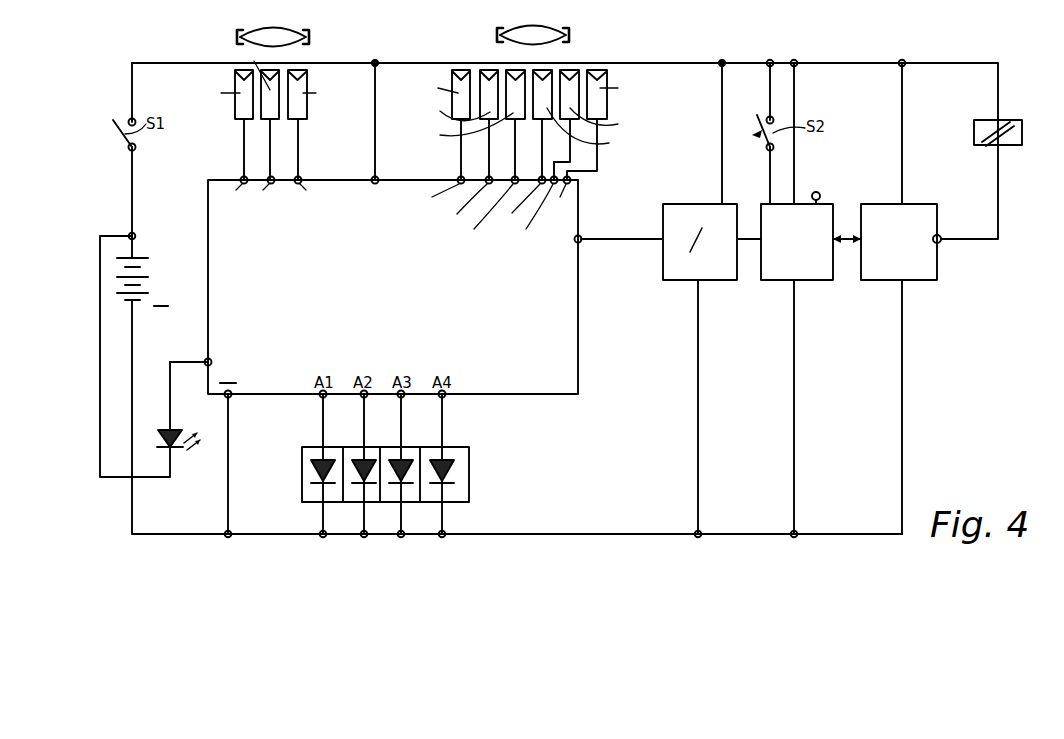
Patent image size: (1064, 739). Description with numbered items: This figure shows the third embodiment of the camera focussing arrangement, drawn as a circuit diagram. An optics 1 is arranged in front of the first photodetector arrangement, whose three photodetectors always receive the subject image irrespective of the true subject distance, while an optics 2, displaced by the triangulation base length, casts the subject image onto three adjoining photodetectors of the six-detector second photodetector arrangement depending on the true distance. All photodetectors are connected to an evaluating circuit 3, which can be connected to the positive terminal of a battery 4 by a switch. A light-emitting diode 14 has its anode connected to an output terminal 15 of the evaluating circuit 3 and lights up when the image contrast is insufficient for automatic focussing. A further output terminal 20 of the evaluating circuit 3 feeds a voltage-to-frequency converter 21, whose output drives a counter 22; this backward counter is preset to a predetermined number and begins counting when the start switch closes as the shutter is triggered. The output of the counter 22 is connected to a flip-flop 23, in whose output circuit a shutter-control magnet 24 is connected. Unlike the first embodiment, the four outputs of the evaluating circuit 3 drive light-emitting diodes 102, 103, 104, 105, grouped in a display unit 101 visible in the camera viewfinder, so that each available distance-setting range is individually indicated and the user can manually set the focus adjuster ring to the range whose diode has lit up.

The optics 1 is at (284, 33).
The optics 2 is at (546, 37).
The evaluating circuit 3 is at (225, 222).
The battery 4 is at (150, 285).
The light-emitting diode 14 is at (166, 432).
The output terminal 15 is at (223, 365).
The output terminal 20 is at (575, 243).
The voltage-to-frequency converter 21 is at (684, 273).
The counter 22 is at (829, 262).
The flip-flop 23 is at (918, 271).
The shutter-control magnet 24 is at (1008, 144).
The LED display array 101 is at (388, 509).
The light-emitting diode 102 is at (312, 476).
The light-emitting diode 103 is at (372, 486).
The light-emitting diode 104 is at (412, 478).
The light-emitting diode 105 is at (448, 477).